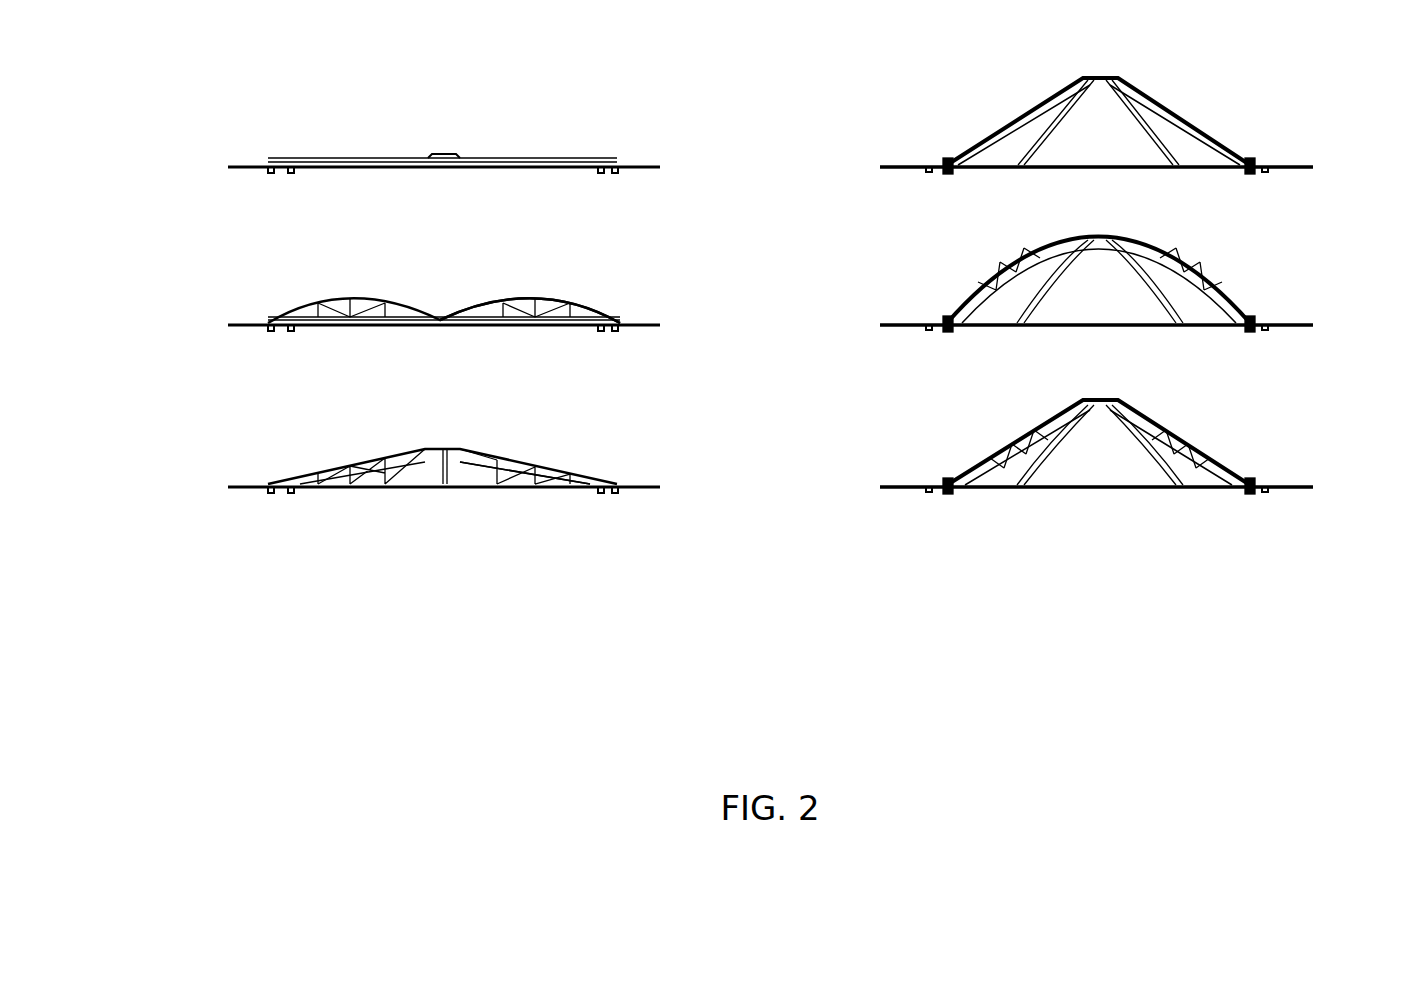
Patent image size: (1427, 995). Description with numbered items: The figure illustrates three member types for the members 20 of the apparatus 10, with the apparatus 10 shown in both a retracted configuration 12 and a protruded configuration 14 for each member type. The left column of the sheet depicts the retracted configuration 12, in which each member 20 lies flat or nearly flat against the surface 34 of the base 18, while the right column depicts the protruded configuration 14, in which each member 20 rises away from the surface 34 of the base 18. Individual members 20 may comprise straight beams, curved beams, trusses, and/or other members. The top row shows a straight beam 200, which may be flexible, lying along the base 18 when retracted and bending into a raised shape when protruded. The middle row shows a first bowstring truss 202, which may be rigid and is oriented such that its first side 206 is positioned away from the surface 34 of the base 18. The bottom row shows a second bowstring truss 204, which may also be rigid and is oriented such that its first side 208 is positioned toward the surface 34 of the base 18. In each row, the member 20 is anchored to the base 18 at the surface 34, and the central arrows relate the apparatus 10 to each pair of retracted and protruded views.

The apparatus 10 is at (664, 183).
The retracted configuration 12 is at (444, 682).
The protruded configuration 14 is at (1095, 682).
The base 18 is at (226, 170).
The members 20 is at (350, 155).
The surface 34 is at (247, 162).
The straight beam 200 is at (1138, 165).
The first bowstring truss 202 is at (1138, 325).
The second bowstring truss 204 is at (1138, 487).
The first side of first bowstring truss 206 is at (535, 296).
The first side of second bowstring truss 208 is at (497, 482).